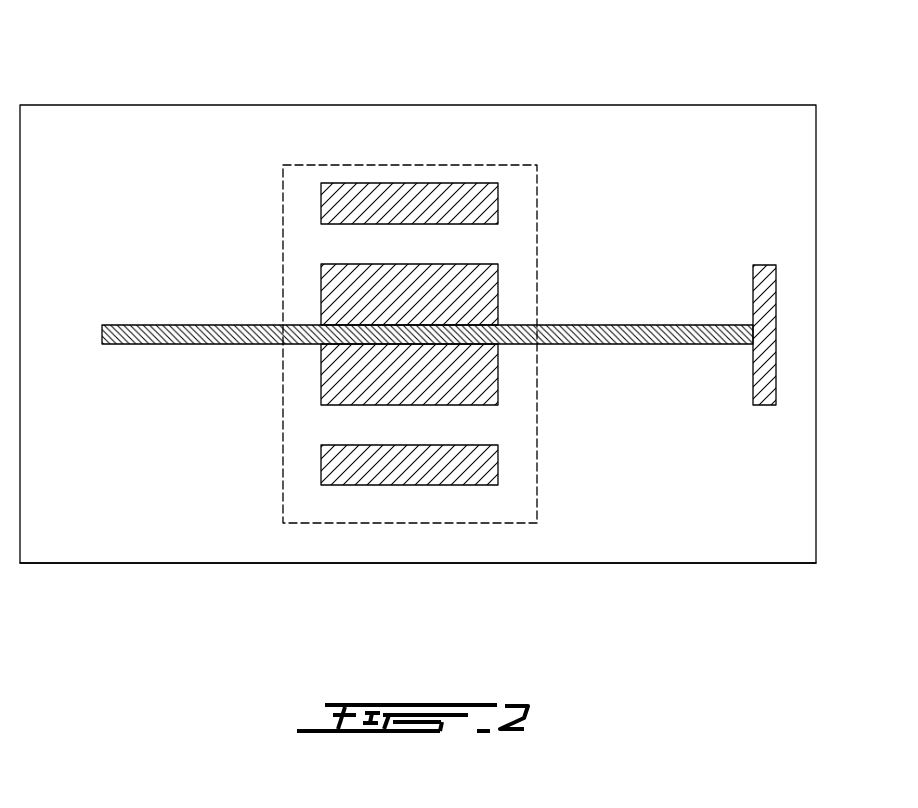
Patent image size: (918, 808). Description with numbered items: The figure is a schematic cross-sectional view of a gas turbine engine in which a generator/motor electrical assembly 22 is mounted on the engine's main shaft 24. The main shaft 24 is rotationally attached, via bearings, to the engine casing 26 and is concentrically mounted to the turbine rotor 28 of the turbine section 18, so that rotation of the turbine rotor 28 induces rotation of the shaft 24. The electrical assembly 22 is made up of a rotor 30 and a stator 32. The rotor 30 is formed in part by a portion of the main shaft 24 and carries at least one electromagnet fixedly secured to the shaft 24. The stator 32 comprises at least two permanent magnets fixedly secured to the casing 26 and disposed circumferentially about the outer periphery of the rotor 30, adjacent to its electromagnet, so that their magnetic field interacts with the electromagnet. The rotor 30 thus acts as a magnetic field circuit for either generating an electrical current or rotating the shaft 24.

The turbine section 18 is at (727, 133).
The generator/motor electrical assembly 22 is at (282, 198).
The main shaft 24 is at (130, 333).
The casing 26 is at (150, 564).
The turbine rotor 28 is at (765, 283).
The rotor 30 is at (462, 297).
The stator 32 is at (425, 197).